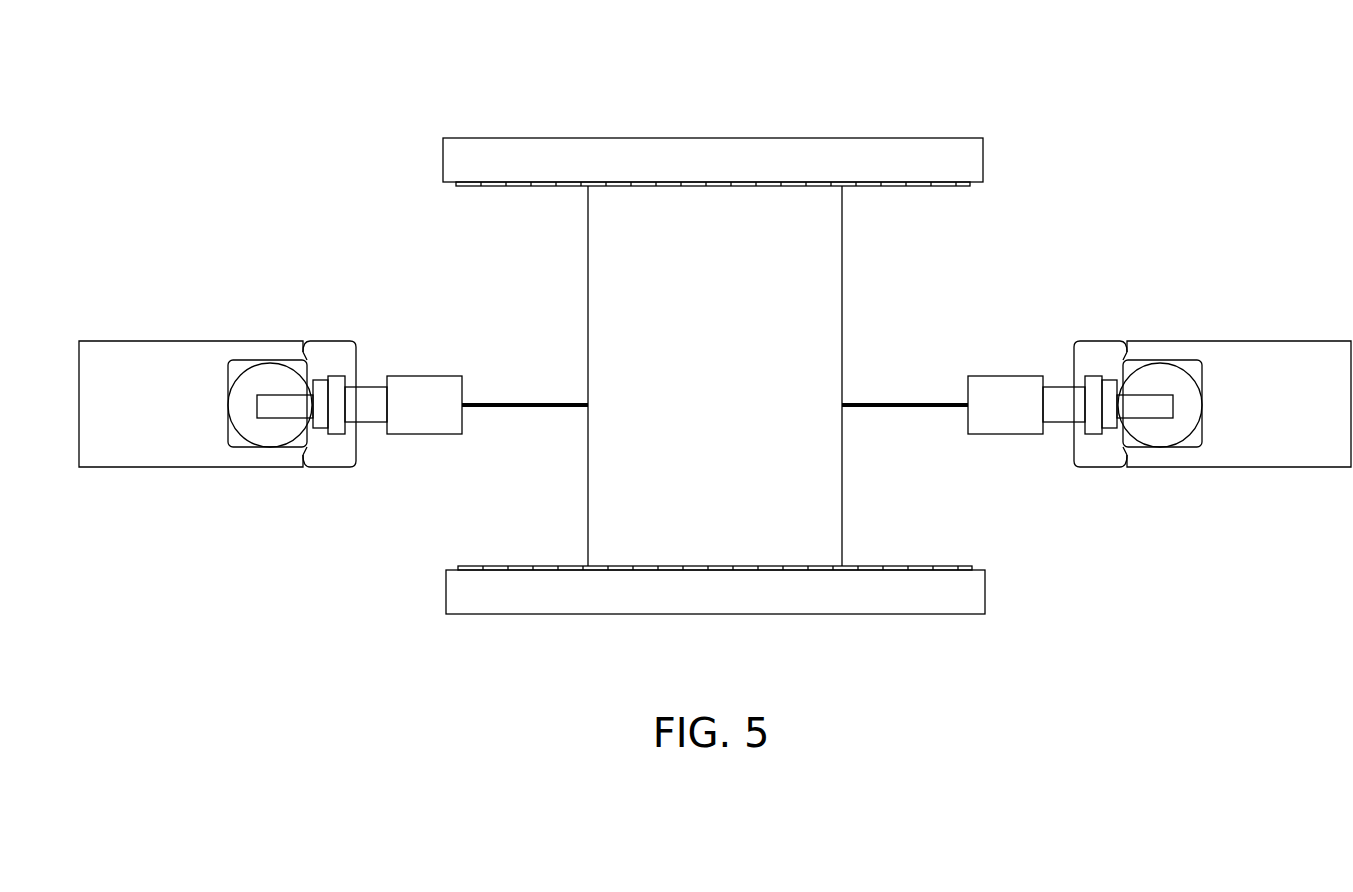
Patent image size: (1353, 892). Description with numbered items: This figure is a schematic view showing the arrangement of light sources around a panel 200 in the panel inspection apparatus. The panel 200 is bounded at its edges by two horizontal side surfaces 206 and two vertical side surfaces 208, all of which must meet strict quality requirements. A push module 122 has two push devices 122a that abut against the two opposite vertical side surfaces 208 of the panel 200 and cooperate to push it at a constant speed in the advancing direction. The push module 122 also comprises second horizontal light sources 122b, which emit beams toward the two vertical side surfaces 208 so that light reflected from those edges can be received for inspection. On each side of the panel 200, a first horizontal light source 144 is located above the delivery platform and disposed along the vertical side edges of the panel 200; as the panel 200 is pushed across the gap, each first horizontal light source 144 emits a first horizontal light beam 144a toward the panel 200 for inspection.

The push module 122 is at (433, 136).
The push device 122a is at (940, 157).
The second horizontal light source 122b is at (820, 180).
The first horizontal light source 144 is at (372, 405).
The first horizontal light beam 144a is at (527, 402).
The panel 200 is at (855, 290).
The horizontal side surface 206 is at (588, 222).
The vertical side surface 208 is at (790, 187).